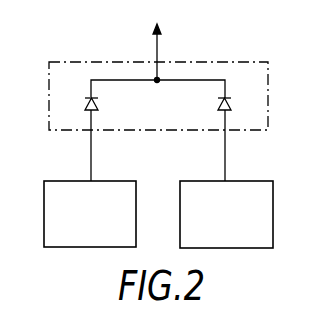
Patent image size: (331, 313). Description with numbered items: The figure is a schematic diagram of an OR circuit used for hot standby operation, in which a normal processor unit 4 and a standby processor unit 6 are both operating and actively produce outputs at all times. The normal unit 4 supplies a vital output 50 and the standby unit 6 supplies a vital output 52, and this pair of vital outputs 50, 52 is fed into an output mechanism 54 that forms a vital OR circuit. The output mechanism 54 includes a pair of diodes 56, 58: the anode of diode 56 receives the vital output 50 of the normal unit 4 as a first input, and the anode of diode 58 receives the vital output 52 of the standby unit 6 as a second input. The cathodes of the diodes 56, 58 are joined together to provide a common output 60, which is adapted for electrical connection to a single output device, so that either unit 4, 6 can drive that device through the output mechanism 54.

The normal processor unit 4 is at (44, 200).
The standby processor unit 6 is at (273, 200).
The vital output 50 is at (88, 178).
The vital output 52 is at (240, 163).
The output mechanism 54 is at (73, 62).
The diode 56 is at (98, 100).
The diode 58 is at (218, 99).
The common output 60 is at (157, 47).